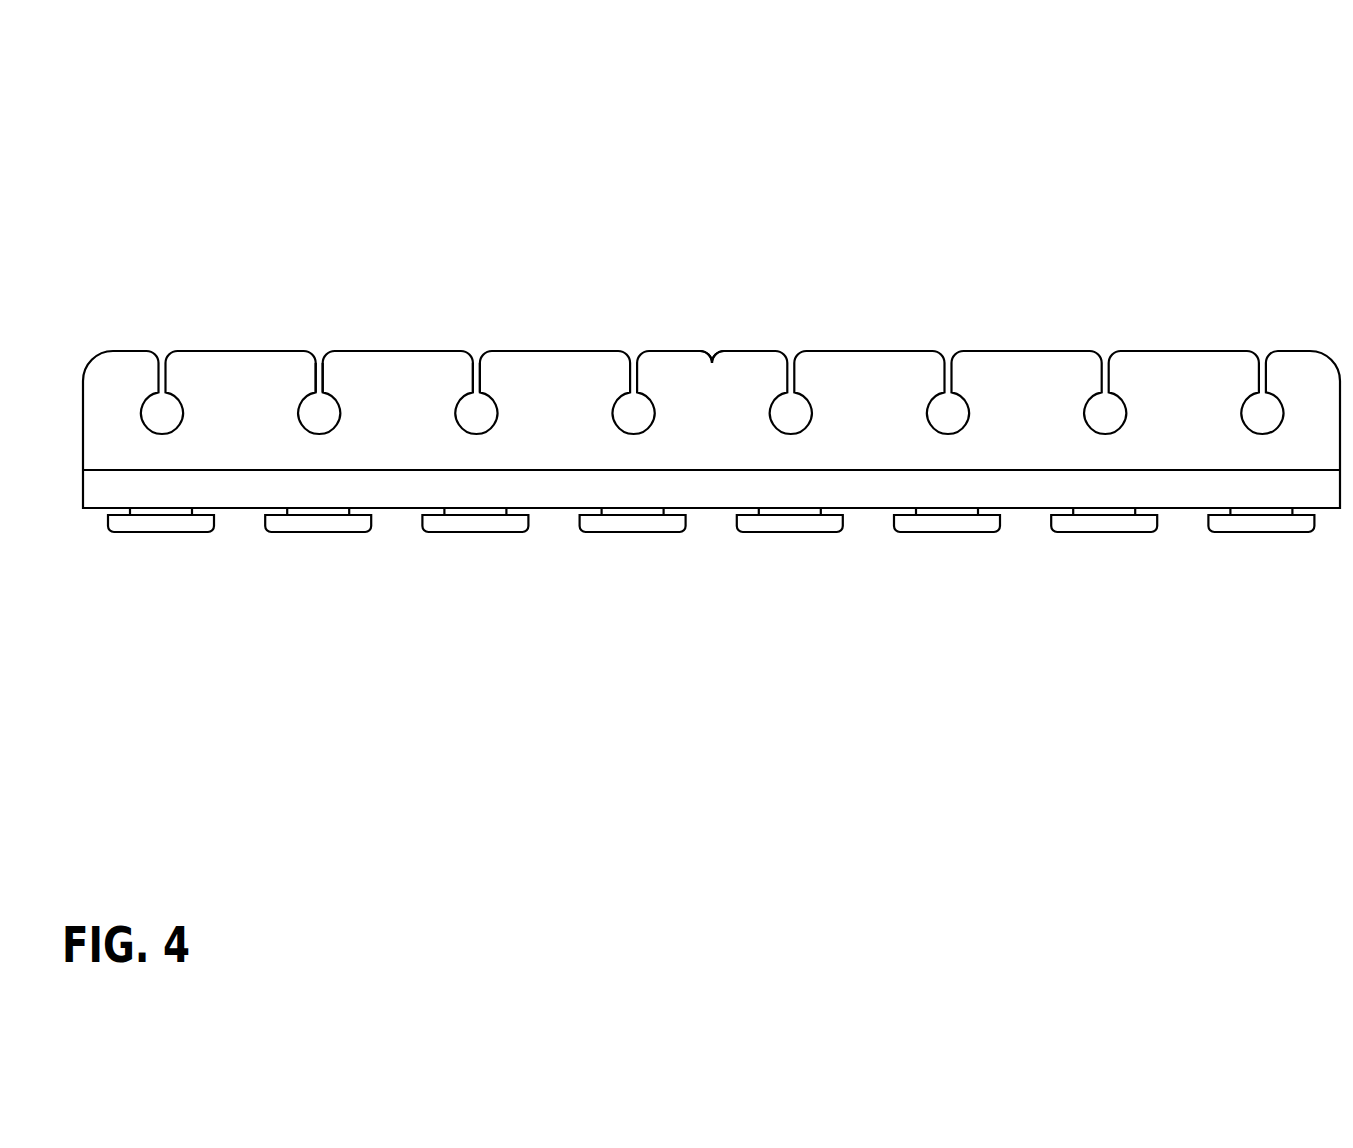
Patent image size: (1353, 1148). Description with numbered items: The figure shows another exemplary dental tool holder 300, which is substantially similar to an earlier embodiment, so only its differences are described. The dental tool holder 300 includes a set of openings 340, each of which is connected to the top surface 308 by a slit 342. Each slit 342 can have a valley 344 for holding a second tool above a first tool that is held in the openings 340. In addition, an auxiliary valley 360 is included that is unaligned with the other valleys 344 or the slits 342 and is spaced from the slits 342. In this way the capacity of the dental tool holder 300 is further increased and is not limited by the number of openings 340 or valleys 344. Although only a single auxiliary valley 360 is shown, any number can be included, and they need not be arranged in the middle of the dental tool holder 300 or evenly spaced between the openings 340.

The dental tool holder 300 is at (182, 68).
The top surface 308 is at (273, 351).
The valley 344 is at (317, 359).
The auxiliary valley 360 is at (717, 353).
The slit 342 is at (484, 379).
The opening 340 is at (475, 410).